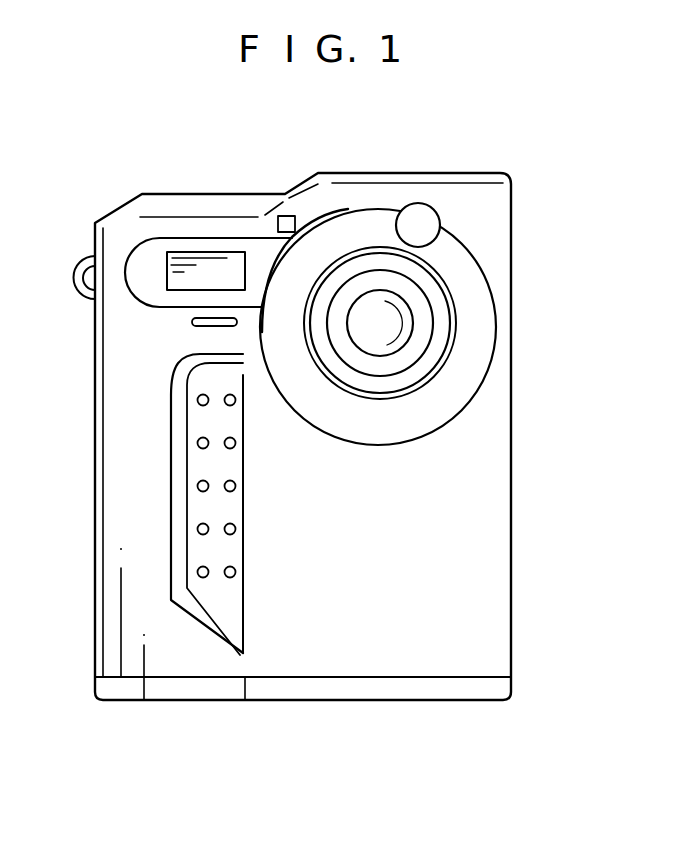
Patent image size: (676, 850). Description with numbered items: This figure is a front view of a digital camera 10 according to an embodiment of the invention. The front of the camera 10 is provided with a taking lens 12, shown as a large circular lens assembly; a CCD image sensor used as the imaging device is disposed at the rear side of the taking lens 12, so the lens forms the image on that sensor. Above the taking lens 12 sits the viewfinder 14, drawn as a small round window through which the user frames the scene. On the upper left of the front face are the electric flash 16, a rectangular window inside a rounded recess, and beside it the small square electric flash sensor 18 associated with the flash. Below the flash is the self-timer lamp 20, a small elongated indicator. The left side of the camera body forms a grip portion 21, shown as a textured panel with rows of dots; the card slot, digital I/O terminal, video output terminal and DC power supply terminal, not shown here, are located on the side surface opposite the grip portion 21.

The digital camera 10 is at (475, 488).
The taking lens 12 is at (405, 332).
The viewfinder 14 is at (423, 203).
The electric flash 16 is at (198, 257).
The electric flash sensor 18 is at (283, 215).
The self-timer lamp 20 is at (213, 327).
The grip portion 21 is at (176, 526).